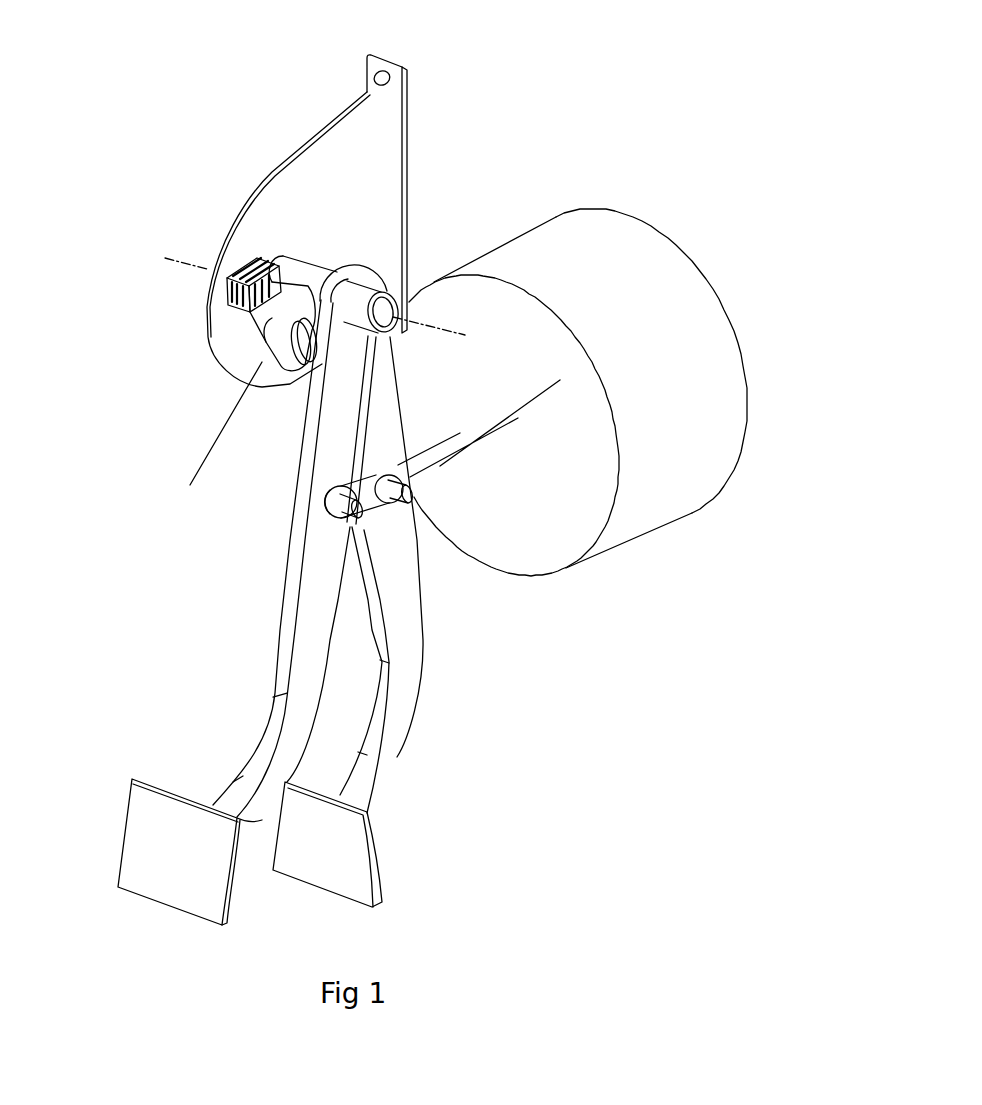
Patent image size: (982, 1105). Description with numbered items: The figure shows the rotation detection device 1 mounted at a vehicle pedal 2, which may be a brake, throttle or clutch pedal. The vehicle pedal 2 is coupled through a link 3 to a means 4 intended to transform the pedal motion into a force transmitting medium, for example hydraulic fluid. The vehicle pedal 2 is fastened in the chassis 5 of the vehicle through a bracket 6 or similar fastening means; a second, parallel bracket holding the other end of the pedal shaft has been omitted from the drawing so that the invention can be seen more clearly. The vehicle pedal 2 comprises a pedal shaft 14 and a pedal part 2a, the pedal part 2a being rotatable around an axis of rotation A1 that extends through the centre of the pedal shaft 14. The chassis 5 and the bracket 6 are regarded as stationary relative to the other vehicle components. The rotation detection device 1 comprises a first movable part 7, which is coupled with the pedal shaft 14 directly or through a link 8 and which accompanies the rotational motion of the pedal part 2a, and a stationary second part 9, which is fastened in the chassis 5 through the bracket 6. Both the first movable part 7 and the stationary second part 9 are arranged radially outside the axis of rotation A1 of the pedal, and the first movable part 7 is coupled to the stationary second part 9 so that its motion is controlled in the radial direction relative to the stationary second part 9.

The rotation detection device 1 is at (199, 292).
The vehicle pedal 2 is at (217, 612).
The pedal part 2a is at (297, 650).
The link 3 is at (413, 487).
The means intended to transform pedal motion to a force transmitting medium 4 is at (662, 355).
The chassis 5 is at (427, 96).
The bracket 6 is at (290, 185).
The first movable part 7 is at (247, 353).
The link 8 is at (277, 370).
The stationary second part 9 is at (233, 323).
The pedal shaft 14 is at (297, 270).
The axis of rotation A1 is at (425, 320).